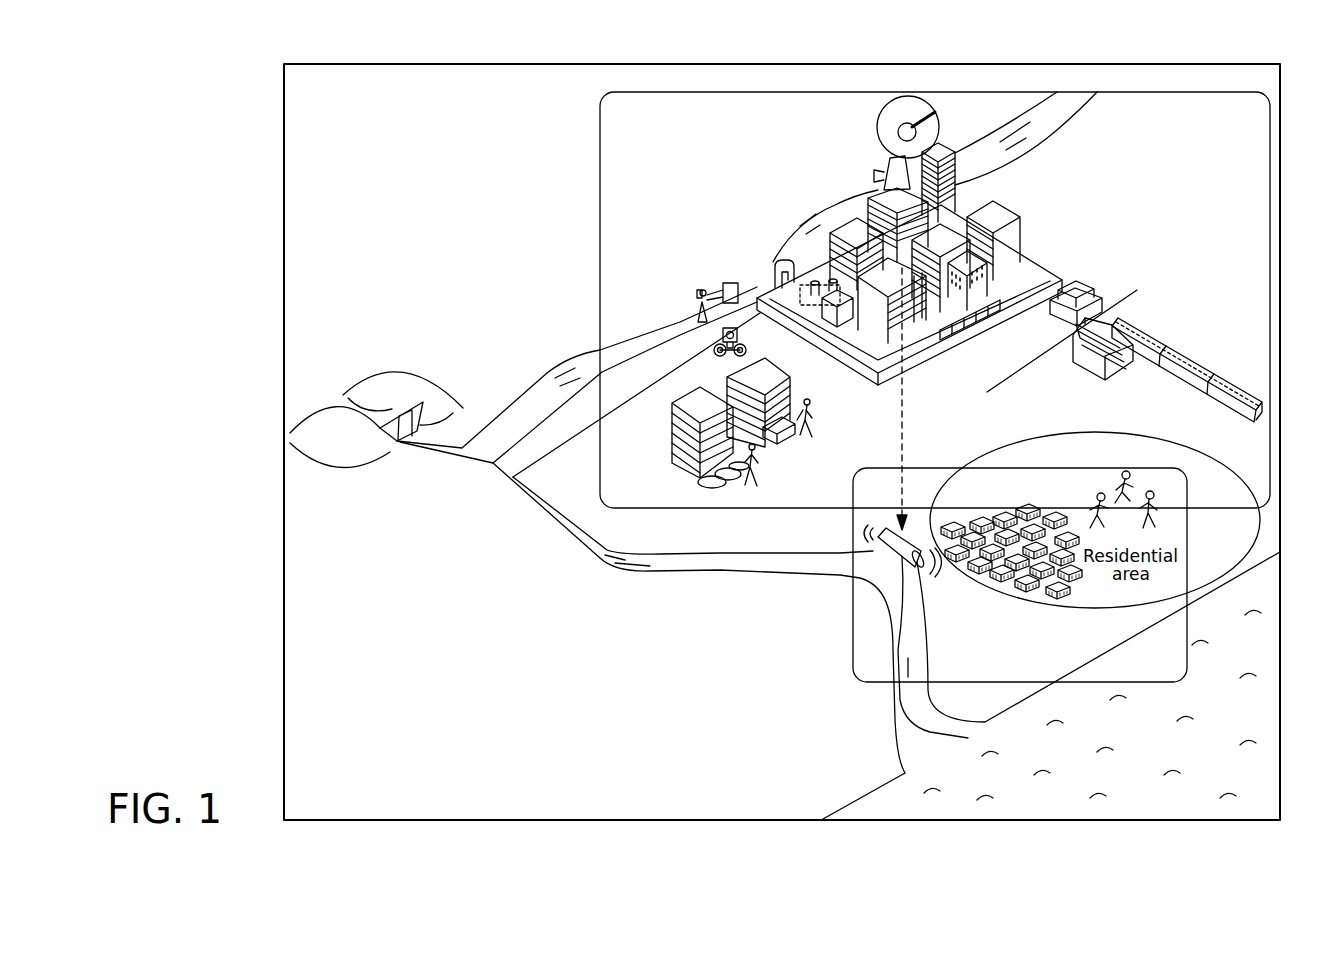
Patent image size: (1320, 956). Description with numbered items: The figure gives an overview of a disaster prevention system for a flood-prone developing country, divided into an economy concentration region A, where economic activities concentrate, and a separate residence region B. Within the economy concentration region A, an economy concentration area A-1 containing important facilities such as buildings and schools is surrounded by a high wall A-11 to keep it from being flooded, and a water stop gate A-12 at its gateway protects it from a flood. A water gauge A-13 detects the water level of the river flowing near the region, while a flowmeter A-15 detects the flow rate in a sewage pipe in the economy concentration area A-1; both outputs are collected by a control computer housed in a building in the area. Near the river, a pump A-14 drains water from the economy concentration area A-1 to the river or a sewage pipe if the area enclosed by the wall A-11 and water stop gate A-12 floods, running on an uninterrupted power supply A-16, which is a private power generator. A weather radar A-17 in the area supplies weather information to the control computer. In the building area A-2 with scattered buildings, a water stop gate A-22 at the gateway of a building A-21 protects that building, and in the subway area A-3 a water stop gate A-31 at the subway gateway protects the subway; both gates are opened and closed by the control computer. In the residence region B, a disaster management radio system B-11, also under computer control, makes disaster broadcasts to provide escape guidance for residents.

The economy concentration region A is at (600, 215).
The economy concentration area A-1 is at (997, 208).
The wall A-11 is at (1066, 252).
The water stop gate A-12 is at (968, 330).
The water gauge A-13 is at (695, 302).
The pump A-14 is at (791, 262).
The flowmeter A-15 is at (722, 334).
The uninterrupted power supply A-16 is at (834, 283).
The weather radar A-17 is at (908, 95).
The building area A-2 is at (781, 368).
The building A-21 is at (765, 367).
The water stop gate A-22 is at (792, 418).
The subway area A-3 is at (1156, 319).
The water stop gate A-31 is at (1067, 328).
The residence region B is at (853, 640).
The disaster management radio system B-11 is at (875, 542).